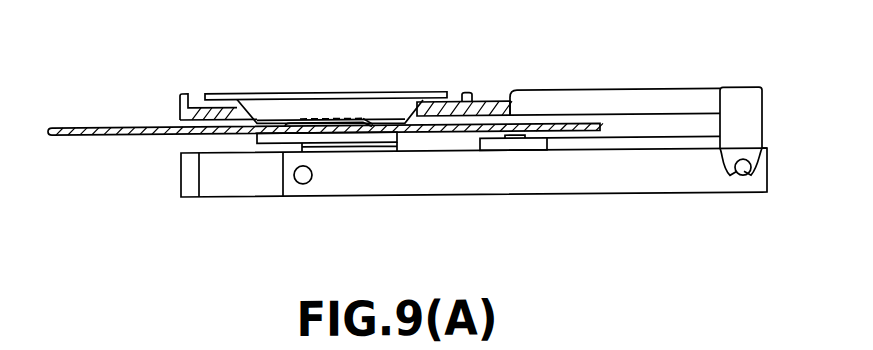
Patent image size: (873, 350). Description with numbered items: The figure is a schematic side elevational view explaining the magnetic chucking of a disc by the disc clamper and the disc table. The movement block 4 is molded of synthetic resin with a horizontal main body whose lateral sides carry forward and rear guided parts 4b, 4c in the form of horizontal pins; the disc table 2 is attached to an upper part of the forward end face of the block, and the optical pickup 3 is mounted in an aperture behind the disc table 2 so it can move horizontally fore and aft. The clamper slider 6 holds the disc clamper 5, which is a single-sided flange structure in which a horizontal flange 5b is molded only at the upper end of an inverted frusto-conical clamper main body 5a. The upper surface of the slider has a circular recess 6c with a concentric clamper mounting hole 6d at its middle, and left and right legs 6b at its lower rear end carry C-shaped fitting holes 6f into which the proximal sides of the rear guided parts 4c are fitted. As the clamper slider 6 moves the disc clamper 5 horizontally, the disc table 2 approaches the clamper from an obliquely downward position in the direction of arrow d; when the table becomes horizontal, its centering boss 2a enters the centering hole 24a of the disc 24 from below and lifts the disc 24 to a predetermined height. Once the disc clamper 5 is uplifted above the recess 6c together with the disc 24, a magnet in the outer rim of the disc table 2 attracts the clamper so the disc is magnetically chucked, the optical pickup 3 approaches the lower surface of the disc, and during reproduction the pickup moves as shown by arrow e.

The disc table 2 is at (393, 145).
The centering boss 2a is at (343, 148).
The optical pickup 3 is at (547, 147).
The movement block 4 is at (436, 183).
The forward guided part 4b is at (303, 185).
The rear guided part 4c is at (741, 180).
The disc clamper 5 is at (313, 74).
The clamper main body 5a is at (352, 100).
The flange 5b is at (213, 94).
The clamper slider 6 is at (624, 93).
The leg 6b is at (741, 92).
The circular recess 6c is at (458, 101).
The clamper mounting hole 6d is at (405, 103).
The C-shaped fitting hole 6f is at (762, 163).
The disc 24 is at (100, 127).
The centering hole 24a is at (300, 124).
The arrow d is at (159, 197).
The arrow e is at (476, 169).